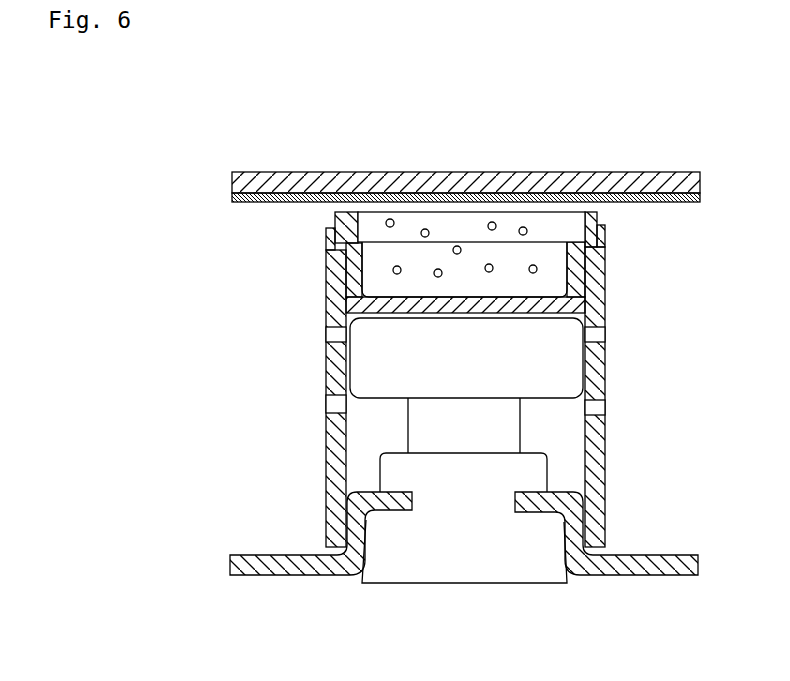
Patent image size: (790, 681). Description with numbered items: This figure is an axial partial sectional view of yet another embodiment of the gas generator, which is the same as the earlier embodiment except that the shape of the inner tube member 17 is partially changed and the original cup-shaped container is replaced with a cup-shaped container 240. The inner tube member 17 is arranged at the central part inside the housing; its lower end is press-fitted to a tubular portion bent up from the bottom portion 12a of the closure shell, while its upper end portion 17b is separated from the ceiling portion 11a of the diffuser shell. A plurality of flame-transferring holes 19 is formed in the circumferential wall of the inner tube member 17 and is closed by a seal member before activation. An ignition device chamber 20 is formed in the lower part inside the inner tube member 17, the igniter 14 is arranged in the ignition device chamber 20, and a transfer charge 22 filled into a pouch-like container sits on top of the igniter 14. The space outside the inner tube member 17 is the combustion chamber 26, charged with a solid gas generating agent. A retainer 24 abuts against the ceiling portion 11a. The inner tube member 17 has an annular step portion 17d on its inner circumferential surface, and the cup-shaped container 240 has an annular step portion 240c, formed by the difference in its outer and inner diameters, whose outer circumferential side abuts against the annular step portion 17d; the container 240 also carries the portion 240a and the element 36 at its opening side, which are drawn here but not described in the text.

The ceiling portion 11a is at (487, 180).
The retainer 24 is at (260, 202).
The flame-transferring holes 19 is at (328, 402).
The combustion chamber 26 is at (672, 404).
The inner tube member 17 is at (629, 397).
The upper end portion 17b is at (327, 238).
The annular step portion 17d is at (605, 233).
The cup-shaped container 240 is at (580, 303).
The right tab of absorber holder 240a is at (588, 212).
The annular step portion 240c is at (352, 243).
The perforated plate 36 is at (424, 230).
The transfer charge 22 is at (414, 370).
The ignition device chamber 20 is at (565, 441).
The bottom portion 12a is at (643, 568).
The igniter 14 is at (409, 571).